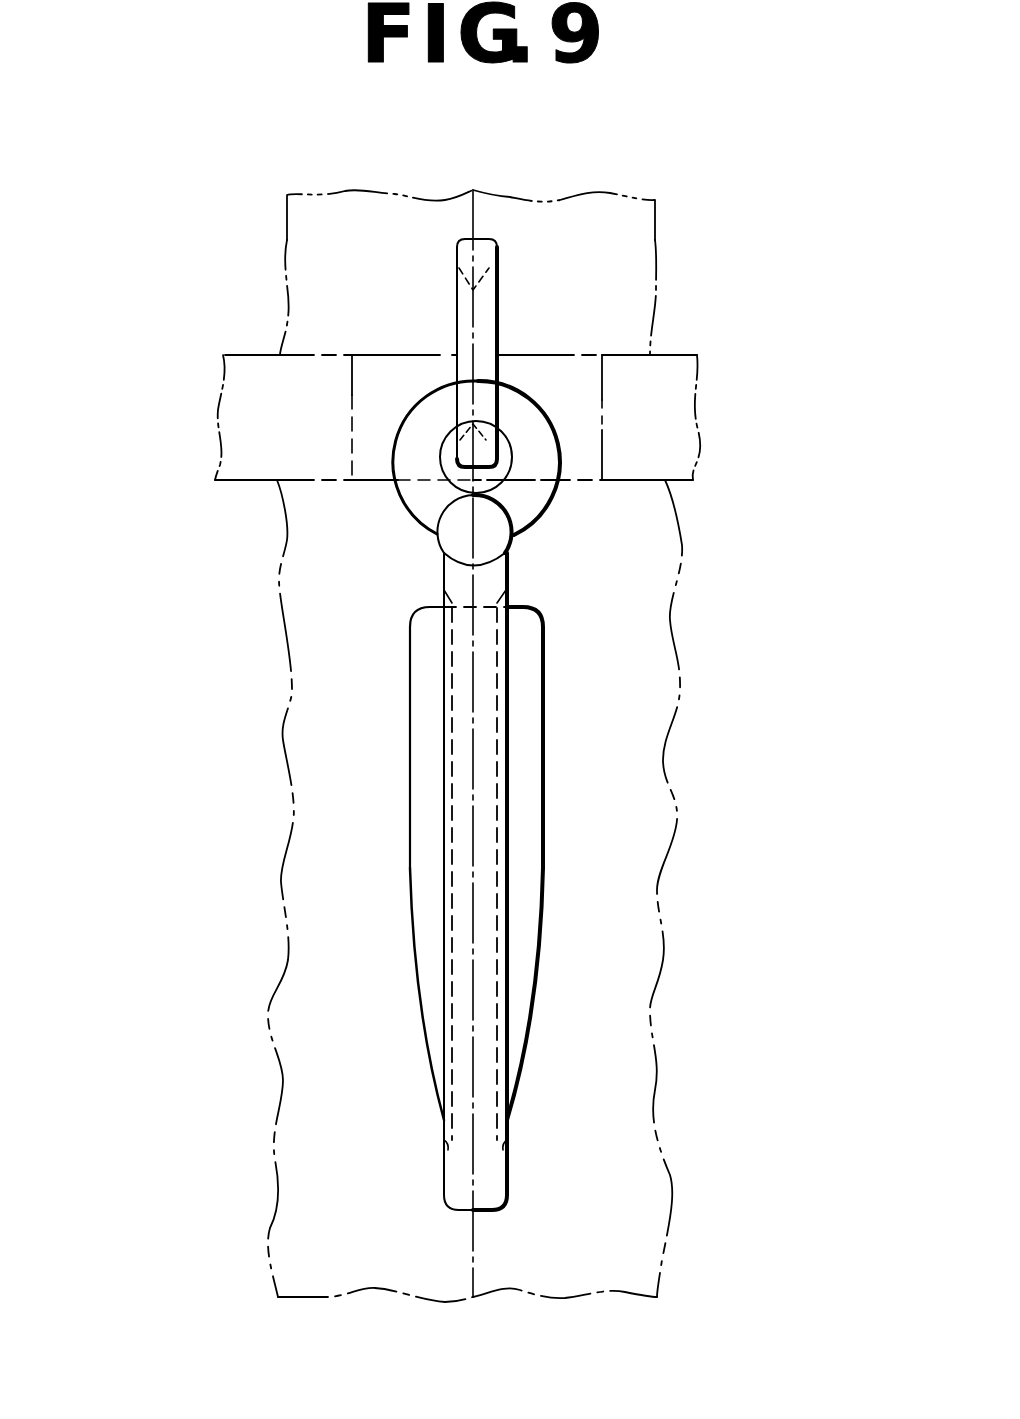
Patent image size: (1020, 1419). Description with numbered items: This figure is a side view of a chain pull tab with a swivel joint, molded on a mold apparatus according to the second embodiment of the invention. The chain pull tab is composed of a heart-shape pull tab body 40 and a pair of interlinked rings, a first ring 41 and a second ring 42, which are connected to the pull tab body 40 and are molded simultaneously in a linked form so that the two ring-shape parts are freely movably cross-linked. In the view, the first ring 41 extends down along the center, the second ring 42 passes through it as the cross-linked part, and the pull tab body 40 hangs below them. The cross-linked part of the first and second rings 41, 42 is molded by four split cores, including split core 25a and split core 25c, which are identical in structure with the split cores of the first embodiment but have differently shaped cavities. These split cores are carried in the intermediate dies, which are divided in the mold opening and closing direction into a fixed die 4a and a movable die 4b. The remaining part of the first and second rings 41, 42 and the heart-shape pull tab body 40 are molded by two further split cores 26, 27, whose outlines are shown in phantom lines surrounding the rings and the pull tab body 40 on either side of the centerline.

The split core 26 is at (322, 243).
The split core 27 is at (628, 247).
The fixed die 4a is at (688, 428).
The movable die 4b is at (250, 480).
The split core 25a is at (738, 375).
The split core 25c is at (216, 372).
The heart-shape pull tab body 40 is at (543, 730).
The first ring 41 is at (500, 317).
The second ring 42 is at (518, 500).